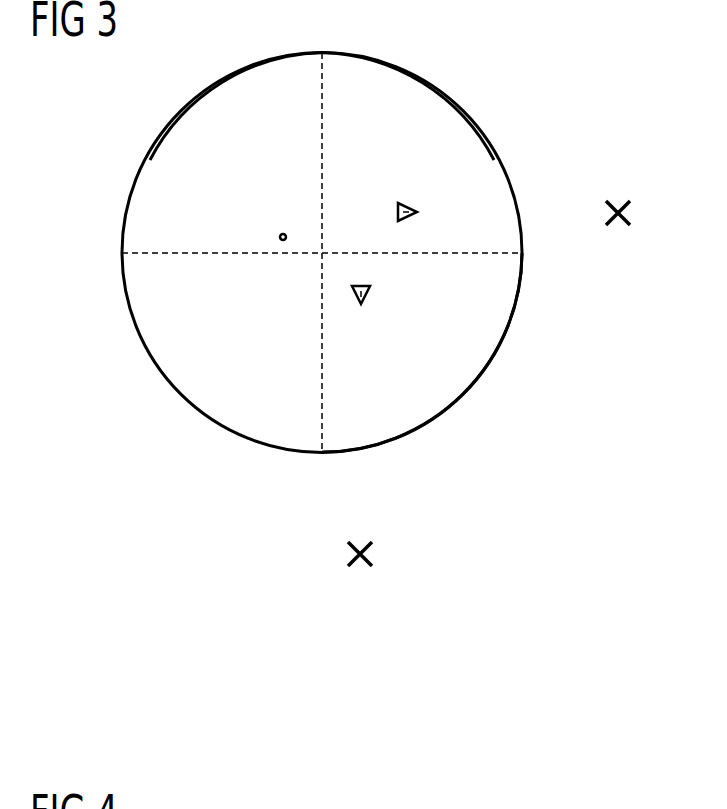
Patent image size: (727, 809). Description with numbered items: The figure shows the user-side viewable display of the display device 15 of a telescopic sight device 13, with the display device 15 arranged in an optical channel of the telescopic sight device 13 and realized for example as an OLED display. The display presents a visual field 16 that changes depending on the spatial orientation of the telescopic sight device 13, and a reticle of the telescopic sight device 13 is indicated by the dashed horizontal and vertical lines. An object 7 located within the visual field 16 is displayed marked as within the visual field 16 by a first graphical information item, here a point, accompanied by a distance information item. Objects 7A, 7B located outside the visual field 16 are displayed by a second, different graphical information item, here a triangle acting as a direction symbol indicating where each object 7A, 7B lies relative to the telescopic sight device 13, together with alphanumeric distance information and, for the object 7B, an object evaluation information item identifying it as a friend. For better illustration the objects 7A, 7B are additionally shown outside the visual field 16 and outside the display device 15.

The telescopic sight device 13 is at (472, 93).
The display device 15 is at (191, 100).
The visual field 16 is at (423, 382).
The object 7 is at (279, 237).
The object 7A is at (418, 212).
The object 7B is at (371, 290).